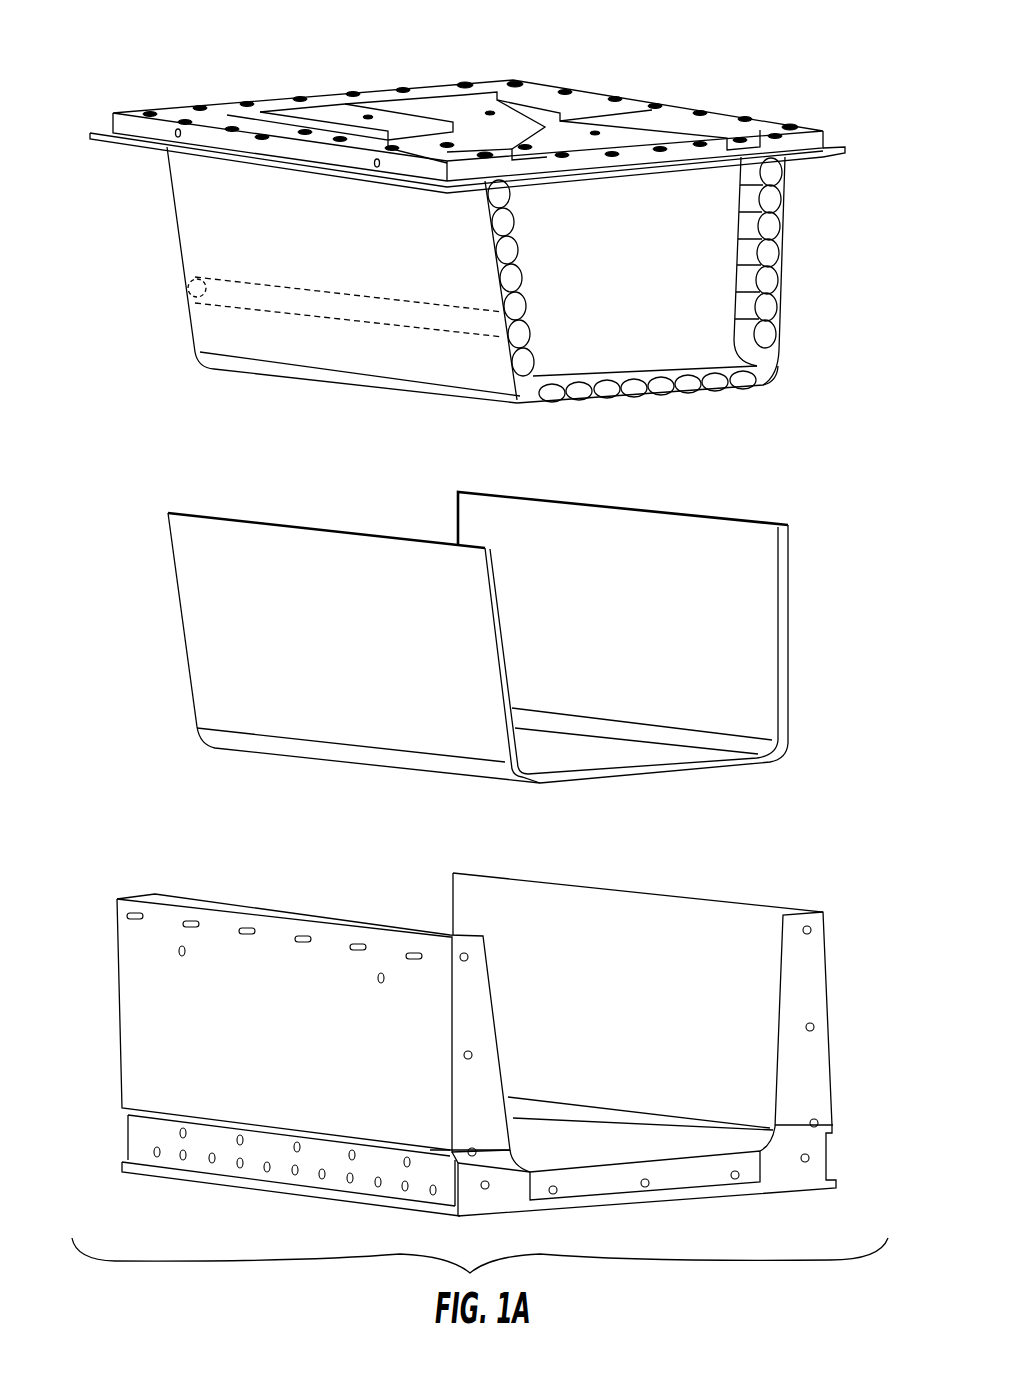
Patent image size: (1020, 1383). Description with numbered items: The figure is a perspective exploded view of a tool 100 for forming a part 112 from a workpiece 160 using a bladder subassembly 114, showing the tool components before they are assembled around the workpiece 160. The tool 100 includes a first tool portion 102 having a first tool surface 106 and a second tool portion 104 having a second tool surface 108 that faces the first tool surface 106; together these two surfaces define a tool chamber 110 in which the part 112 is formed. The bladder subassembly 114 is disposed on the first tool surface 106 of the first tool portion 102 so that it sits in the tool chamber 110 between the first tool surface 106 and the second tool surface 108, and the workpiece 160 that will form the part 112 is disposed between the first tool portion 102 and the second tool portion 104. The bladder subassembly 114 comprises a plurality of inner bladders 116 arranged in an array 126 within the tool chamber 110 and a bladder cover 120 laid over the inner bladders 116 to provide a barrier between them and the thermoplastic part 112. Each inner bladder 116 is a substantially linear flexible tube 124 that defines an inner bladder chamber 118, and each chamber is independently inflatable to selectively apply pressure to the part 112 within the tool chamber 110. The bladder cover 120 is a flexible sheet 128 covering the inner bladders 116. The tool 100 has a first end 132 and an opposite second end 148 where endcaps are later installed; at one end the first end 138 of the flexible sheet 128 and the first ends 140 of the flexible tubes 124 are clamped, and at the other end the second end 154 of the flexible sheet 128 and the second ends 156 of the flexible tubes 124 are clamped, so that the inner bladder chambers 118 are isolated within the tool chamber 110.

The tool 100 is at (195, 46).
The first tool portion 102 is at (748, 172).
The second tool portion 104 is at (818, 982).
The first tool surface 106 is at (745, 290).
The second tool surface 108 is at (740, 935).
The tool chamber 110 is at (429, 843).
The part 112 is at (190, 648).
The bladder subassembly 114 is at (765, 326).
The inner bladders 116 is at (517, 325).
The inner bladder chamber 118 is at (662, 392).
The bladder cover 120 is at (778, 352).
The flexible tube 124 is at (290, 300).
The array 126 is at (523, 403).
The flexible sheet 128 is at (775, 375).
The first end 132 is at (720, 211).
The first end 138 is at (848, 148).
The first ends 140 is at (497, 320).
The second end 148 is at (184, 250).
The second end 154 is at (95, 134).
The second ends 156 is at (197, 292).
The workpiece 160 is at (177, 596).